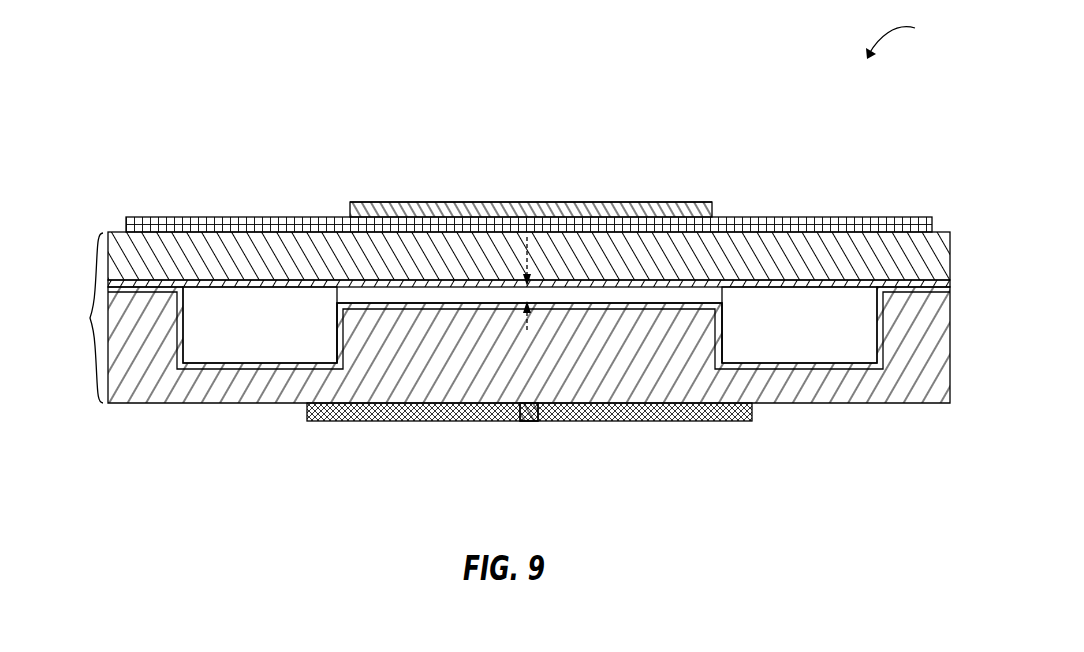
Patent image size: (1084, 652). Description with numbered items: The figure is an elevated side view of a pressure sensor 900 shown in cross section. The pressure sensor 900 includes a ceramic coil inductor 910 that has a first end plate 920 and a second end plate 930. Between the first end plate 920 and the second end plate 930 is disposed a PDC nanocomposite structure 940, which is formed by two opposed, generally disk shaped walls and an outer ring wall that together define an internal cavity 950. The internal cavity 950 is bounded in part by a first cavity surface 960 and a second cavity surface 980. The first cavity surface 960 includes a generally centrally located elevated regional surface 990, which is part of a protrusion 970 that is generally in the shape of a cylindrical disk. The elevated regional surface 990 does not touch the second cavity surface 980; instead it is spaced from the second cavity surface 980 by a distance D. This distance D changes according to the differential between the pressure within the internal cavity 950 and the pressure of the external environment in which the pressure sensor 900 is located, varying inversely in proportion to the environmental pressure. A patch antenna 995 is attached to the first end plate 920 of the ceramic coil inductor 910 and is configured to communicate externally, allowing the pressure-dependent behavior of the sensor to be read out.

The pressure sensor 900 is at (918, 37).
The ceramic coil inductor 910 is at (208, 222).
The first end plate 920 is at (432, 212).
The second end plate 930 is at (636, 421).
The PDC nanocomposite structure 940 is at (496, 318).
The internal cavity 950 is at (243, 320).
The first cavity surface 960 is at (217, 362).
The protrusion 970 is at (442, 362).
The second cavity surface 980 is at (290, 297).
The elevated regional surface 990 is at (613, 302).
The patch antenna 995 is at (580, 202).
The distance D is at (525, 291).